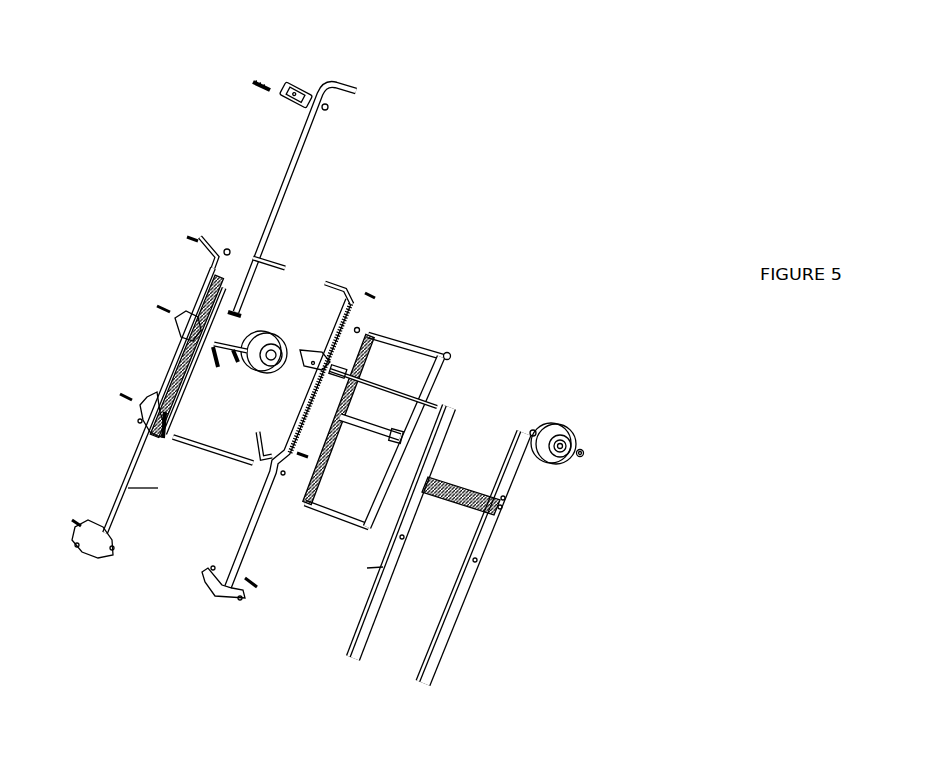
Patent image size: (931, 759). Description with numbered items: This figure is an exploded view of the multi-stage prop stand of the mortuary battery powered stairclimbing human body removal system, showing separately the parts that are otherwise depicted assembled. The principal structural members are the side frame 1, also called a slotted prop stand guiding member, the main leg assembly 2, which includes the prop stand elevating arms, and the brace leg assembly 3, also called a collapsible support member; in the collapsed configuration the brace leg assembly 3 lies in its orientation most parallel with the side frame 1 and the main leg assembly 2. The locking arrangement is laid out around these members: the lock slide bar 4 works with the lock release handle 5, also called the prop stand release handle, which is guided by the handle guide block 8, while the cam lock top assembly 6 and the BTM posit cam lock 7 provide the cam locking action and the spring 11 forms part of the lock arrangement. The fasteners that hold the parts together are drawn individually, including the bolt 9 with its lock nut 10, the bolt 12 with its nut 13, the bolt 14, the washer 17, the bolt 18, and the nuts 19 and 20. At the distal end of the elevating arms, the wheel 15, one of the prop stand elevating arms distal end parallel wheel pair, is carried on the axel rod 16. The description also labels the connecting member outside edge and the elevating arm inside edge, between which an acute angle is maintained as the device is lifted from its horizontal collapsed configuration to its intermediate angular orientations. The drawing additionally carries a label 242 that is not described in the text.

The side frame 1 is at (122, 447).
The main leg assembly 2 is at (348, 650).
The brace leg assembly 3 is at (405, 332).
The lock slide bar 4 is at (158, 306).
The lock release handle 5 is at (280, 178).
The cam lock top assembly 6 is at (227, 338).
The BTM posit cam lock 7 is at (187, 354).
The handle guide block 8 is at (281, 88).
The bolt 9 is at (115, 387).
The lock nut 10 is at (78, 525).
The spring 11 is at (140, 397).
The bolt 12 is at (202, 237).
The nut 13 is at (230, 300).
The bolt 14 is at (253, 82).
The wheel 15 is at (537, 470).
The axel rod 16 is at (375, 378).
The washer 17 is at (218, 598).
The bolt 18 is at (210, 593).
The nut 19 is at (578, 462).
The nut 20 is at (446, 352).
The cross bar 242 is at (277, 261).